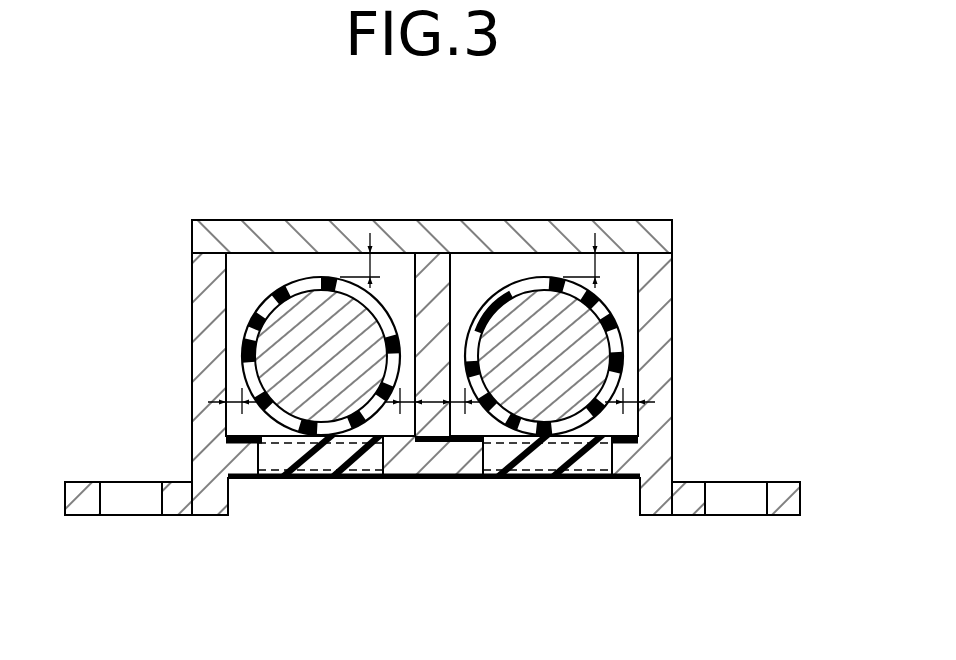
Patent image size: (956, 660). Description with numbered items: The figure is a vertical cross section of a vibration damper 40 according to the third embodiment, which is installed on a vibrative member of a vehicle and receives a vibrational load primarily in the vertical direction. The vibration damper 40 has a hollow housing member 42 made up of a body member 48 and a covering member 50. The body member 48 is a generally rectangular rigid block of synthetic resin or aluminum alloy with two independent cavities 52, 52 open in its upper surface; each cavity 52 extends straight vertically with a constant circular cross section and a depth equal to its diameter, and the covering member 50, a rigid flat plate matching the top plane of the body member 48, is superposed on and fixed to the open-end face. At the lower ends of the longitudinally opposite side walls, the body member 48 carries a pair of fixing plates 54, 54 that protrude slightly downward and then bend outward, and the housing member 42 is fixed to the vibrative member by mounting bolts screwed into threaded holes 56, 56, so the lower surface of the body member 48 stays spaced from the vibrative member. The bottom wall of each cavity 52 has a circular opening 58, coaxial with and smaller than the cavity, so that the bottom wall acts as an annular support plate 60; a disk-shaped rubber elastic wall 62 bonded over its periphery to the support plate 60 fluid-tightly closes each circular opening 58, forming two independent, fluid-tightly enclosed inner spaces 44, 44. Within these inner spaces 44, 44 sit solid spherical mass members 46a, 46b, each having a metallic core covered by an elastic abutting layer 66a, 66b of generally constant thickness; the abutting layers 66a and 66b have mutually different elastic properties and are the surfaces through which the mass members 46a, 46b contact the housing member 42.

The vibration damper 40 is at (703, 230).
The housing member 42 is at (632, 208).
The inner space 44 is at (338, 263).
The mass member 46a is at (625, 328).
The mass member 46b is at (252, 307).
The body member 48 is at (657, 368).
The covering member 50 is at (528, 233).
The cavity 52 is at (227, 280).
The fixing plate 54 is at (183, 503).
The threaded hole 56 is at (100, 498).
The circular opening 58 is at (383, 457).
The annular support plate 60 is at (248, 458).
The elastic wall 62 is at (320, 462).
The abutting layer 66a is at (600, 307).
The abutting layer 66b is at (303, 287).